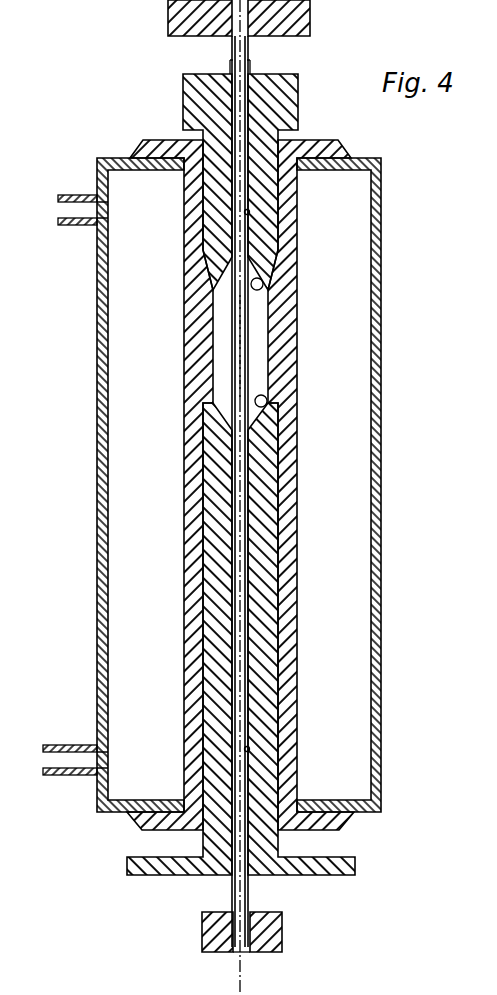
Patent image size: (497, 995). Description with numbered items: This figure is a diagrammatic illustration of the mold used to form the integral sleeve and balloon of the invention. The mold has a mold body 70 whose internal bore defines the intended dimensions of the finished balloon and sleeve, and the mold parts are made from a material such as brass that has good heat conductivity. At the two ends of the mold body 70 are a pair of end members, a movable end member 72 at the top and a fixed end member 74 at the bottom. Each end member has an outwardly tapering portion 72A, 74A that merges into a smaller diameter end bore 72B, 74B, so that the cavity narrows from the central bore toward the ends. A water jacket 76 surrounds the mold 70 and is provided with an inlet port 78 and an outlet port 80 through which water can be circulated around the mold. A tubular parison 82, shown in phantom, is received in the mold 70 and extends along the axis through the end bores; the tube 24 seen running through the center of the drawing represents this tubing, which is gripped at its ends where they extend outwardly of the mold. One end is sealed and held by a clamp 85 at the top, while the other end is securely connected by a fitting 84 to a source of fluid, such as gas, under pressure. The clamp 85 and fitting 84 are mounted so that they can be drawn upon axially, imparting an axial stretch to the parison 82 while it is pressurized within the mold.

The capillary tube 24 is at (249, 490).
The mold body 70 is at (298, 356).
The movable end member 72 is at (298, 107).
The outwardly tapering portion 72A is at (263, 288).
The end bore 72B is at (250, 212).
The fixed end member 74 is at (355, 866).
The outwardly tapering portion 74A is at (268, 394).
The end bore 74B is at (250, 749).
The water jacket 76 is at (97, 487).
The inlet port 78 is at (60, 757).
The outlet port 80 is at (80, 212).
The tubular parison 82 is at (238, 329).
The fitting 84 is at (282, 926).
The clamp 85 is at (310, 22).